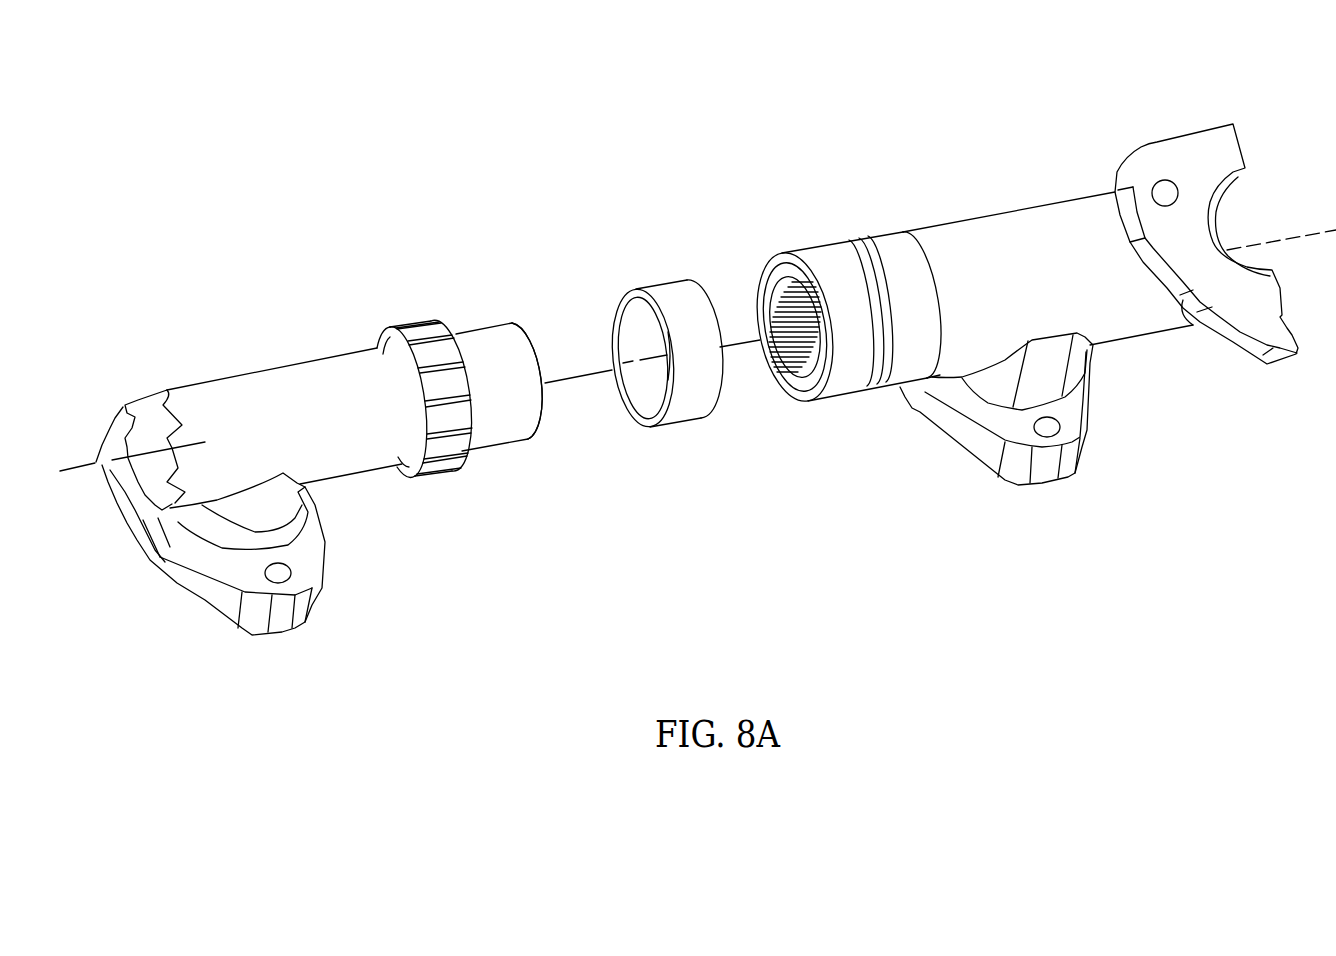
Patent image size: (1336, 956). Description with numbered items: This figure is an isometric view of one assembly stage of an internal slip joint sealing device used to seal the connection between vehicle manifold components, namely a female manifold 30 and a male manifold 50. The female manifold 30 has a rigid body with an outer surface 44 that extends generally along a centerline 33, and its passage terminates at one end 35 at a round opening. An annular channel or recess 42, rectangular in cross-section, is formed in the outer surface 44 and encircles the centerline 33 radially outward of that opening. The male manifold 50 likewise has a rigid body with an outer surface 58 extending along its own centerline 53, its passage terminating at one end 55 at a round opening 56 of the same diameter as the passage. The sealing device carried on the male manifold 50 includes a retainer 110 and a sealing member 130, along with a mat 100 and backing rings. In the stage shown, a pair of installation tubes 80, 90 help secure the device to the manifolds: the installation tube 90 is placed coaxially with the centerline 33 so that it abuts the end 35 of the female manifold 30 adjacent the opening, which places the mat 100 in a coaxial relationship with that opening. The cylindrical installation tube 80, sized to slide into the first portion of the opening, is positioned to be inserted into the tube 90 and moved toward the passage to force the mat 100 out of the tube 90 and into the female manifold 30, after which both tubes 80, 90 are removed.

The female manifold 30 is at (1119, 251).
The centerline 33 is at (578, 397).
The end 35 is at (870, 419).
The annular channel or recess 42 is at (854, 243).
The outer surface 44 is at (931, 228).
The male manifold 50 is at (243, 368).
The centerline 53 is at (574, 378).
The end 55 is at (495, 462).
The opening 56 is at (513, 322).
The outer surface 58 is at (350, 457).
The installation tube 80 is at (678, 420).
The installation tube 90 is at (828, 308).
The mat 100 is at (784, 389).
The retainer 110 is at (399, 377).
The sealing member 130 is at (389, 316).